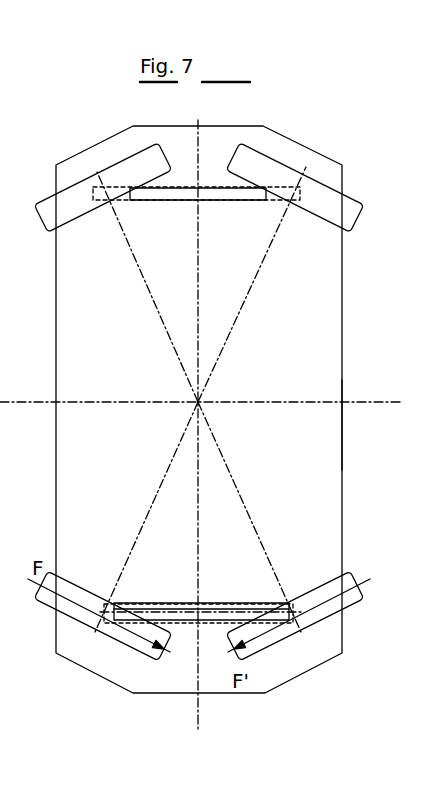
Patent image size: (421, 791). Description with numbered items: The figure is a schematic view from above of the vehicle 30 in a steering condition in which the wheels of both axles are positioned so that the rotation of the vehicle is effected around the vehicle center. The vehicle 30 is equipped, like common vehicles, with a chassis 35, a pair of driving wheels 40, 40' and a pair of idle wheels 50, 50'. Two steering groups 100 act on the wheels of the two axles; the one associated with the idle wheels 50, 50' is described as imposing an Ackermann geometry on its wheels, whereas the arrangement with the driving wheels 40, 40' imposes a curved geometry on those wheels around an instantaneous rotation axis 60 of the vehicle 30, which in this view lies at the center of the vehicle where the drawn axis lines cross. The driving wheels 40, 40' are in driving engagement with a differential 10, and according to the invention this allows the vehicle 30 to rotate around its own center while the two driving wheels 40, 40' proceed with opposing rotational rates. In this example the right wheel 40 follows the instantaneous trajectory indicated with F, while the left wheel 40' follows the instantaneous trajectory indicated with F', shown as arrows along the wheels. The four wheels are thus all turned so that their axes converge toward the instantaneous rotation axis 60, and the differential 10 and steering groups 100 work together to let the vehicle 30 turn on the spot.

The differential 10 is at (177, 600).
The steering group 100 is at (210, 178).
The vehicle 30 is at (310, 350).
The chassis 35 is at (342, 452).
The driving wheel 40 is at (94, 624).
The driving wheel 40' is at (315, 615).
The idle wheel 50 is at (93, 186).
The idle wheel 50' is at (307, 179).
The instantaneous rotation axis 60 is at (193, 398).